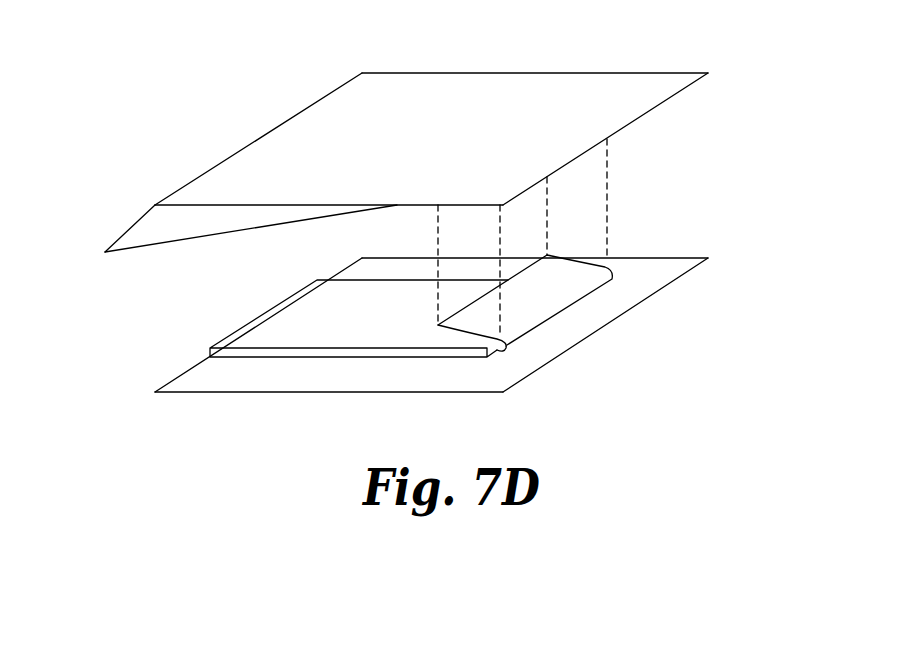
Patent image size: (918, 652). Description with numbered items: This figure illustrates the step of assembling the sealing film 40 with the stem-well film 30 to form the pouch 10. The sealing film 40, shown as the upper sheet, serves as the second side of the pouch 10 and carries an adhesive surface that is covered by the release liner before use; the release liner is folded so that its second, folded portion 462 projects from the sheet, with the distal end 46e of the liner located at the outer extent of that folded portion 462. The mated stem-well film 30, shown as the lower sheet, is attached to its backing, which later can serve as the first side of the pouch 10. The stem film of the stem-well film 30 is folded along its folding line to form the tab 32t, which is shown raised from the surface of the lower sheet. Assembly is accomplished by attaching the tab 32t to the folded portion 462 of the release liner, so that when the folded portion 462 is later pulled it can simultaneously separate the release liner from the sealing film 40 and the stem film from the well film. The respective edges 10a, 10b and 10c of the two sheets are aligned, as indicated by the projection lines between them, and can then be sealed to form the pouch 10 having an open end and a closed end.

The pouch 10 is at (248, 56).
The sealing film 40 is at (706, 46).
The stem-well film 30 is at (697, 236).
The edge 10a is at (427, 205).
The edge 10b is at (638, 119).
The edge 10c is at (626, 72).
The distal end 46e is at (147, 236).
The second folded portion 462 is at (178, 230).
The tab 32t is at (520, 315).